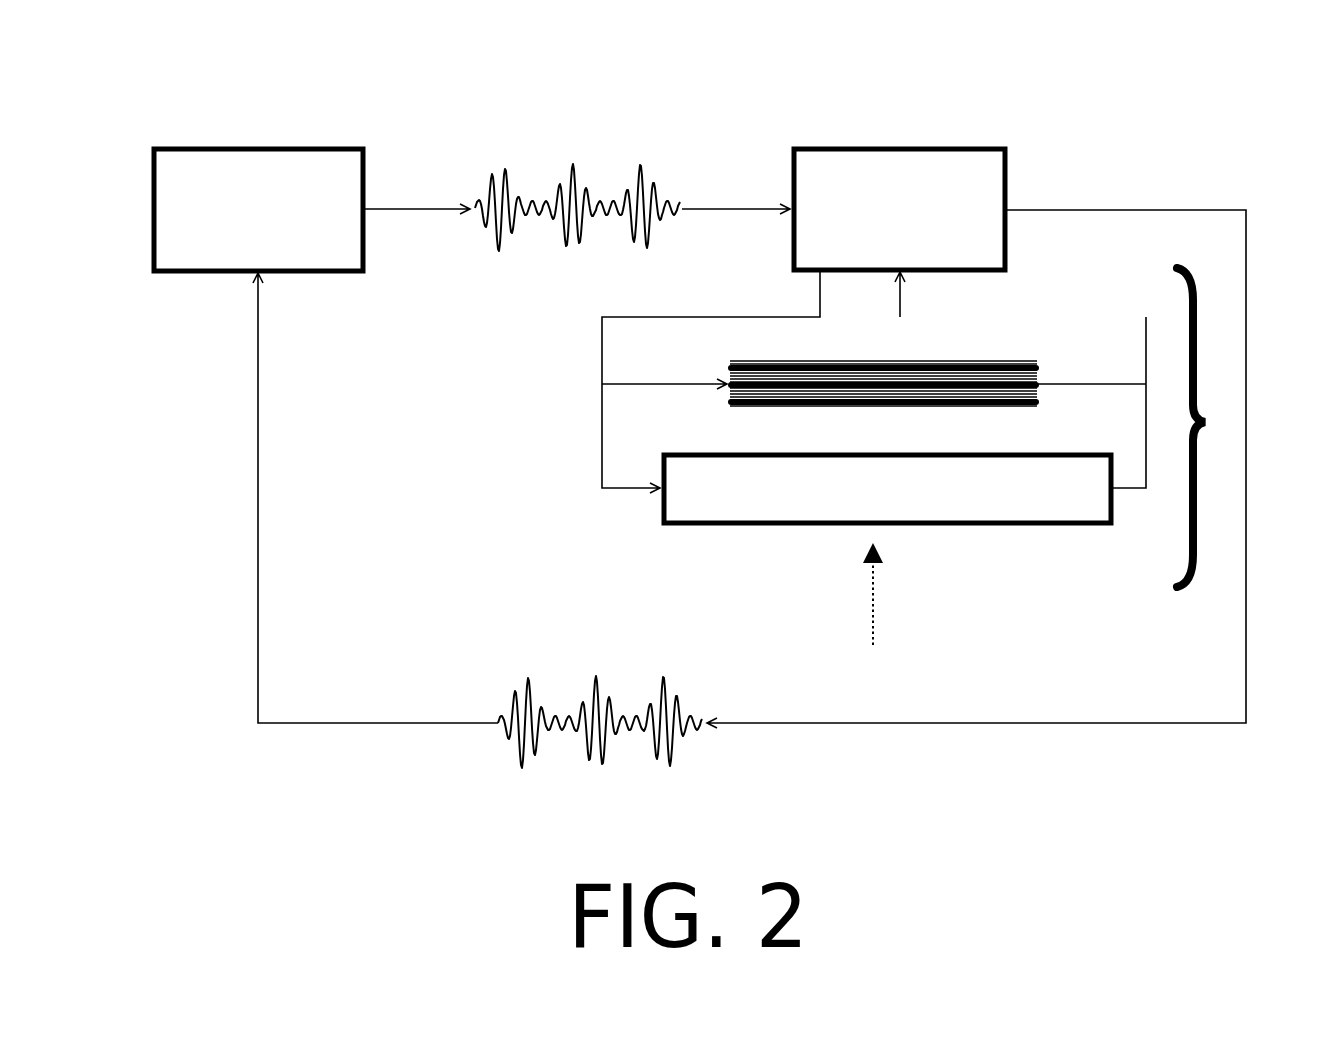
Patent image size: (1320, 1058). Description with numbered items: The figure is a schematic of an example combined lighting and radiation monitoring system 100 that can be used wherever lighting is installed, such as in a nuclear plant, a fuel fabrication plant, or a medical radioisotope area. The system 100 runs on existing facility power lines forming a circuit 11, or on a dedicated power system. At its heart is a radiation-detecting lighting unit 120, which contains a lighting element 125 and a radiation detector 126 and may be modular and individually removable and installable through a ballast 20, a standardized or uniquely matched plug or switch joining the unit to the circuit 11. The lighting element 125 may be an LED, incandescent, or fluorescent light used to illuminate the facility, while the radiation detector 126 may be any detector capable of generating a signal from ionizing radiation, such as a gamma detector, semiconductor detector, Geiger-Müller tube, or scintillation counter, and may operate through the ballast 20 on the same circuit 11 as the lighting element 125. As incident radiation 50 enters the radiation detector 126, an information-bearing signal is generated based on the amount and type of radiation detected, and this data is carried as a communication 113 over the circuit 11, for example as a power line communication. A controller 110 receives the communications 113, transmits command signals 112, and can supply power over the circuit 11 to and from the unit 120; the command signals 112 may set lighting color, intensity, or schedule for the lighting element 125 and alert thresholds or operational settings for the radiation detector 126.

The combined lighting and radiation monitoring system 100 is at (1225, 801).
The controller 110 is at (250, 146).
The command signals 112 is at (573, 160).
The communication 113 is at (683, 713).
The electrical circuit 11 is at (258, 490).
The ballast 20 is at (968, 147).
The radiation-detecting lighting unit 120 is at (1205, 422).
The lighting element 125 is at (1010, 359).
The radiation detector 126 is at (983, 527).
The incident radiation 50 is at (876, 612).